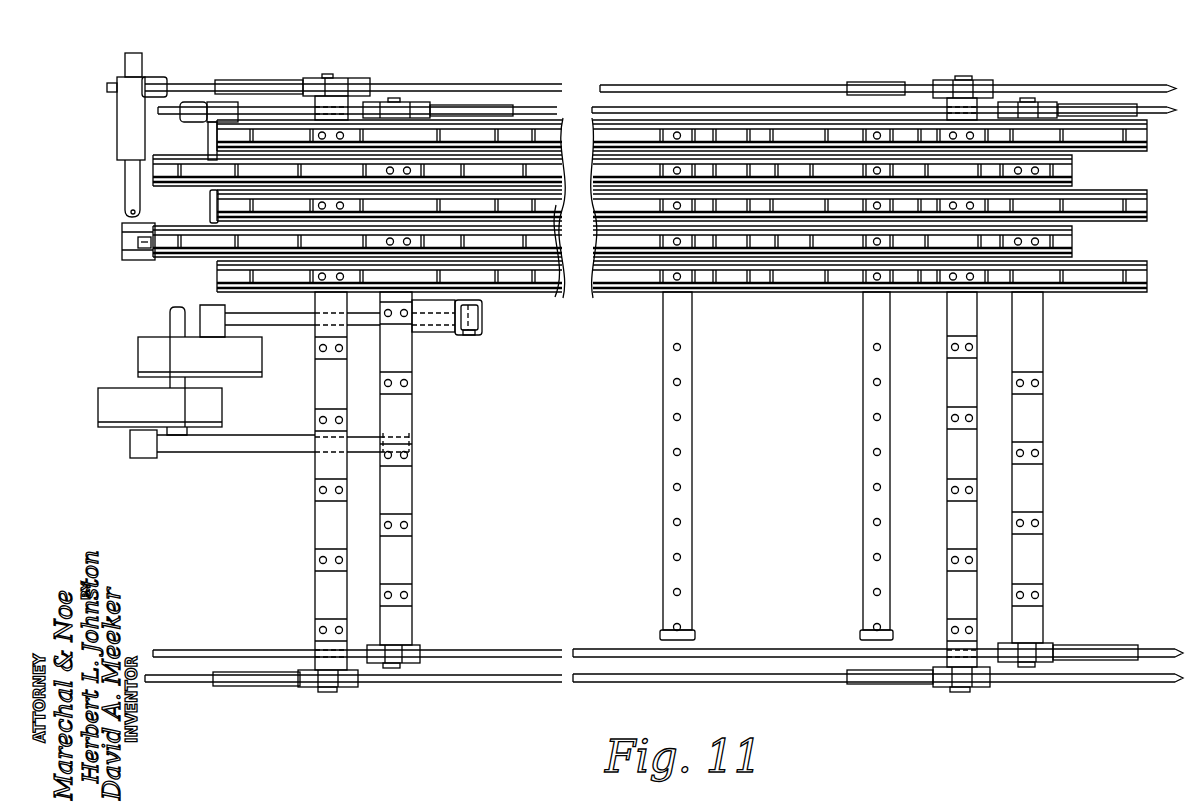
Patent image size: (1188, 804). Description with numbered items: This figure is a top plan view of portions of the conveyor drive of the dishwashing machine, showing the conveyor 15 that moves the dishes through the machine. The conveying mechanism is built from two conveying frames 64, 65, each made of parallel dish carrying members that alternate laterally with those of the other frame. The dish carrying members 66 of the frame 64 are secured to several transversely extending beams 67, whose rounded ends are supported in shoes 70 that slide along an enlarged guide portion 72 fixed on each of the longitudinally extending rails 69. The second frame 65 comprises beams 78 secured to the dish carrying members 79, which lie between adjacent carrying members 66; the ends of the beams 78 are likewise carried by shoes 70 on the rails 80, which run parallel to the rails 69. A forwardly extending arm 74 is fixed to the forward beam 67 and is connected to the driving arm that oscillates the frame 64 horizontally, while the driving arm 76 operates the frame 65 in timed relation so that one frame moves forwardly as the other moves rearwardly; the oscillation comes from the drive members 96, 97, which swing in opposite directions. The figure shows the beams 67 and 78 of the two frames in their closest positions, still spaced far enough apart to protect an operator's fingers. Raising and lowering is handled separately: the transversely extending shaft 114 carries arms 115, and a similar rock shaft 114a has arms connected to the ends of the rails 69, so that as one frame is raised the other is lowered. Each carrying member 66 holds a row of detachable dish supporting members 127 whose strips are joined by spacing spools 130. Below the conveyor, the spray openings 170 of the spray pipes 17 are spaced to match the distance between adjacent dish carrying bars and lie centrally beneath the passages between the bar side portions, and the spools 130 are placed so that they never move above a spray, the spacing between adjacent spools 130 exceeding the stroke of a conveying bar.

The conveyor 15 is at (648, 133).
The distributing spray pipe 17 is at (692, 540).
The conveying frame 64 is at (340, 78).
The conveying frame 65 is at (405, 100).
The dish carrying member 66 is at (563, 292).
The transversely extending beam 67 is at (315, 516).
The longitudinally extending rail 69 is at (760, 70).
The shoe 70 is at (952, 72).
The enlarged guide portion 72 is at (915, 72).
The forwardly extending arm 74 is at (430, 326).
The driving arm 76 is at (292, 425).
The beam 78 is at (412, 485).
The dish carrying member 79 is at (600, 292).
The longitudinally extending rail 80 is at (789, 105).
The drive member 96 is at (262, 355).
The drive member 97 is at (220, 398).
The transversely extending shaft 114 is at (215, 205).
The rock shaft 114a is at (127, 210).
The arm 115 is at (198, 120).
The dish supporting member 127 is at (1075, 172).
The spacing spool 130 is at (1133, 188).
The spray opening 170 is at (681, 418).